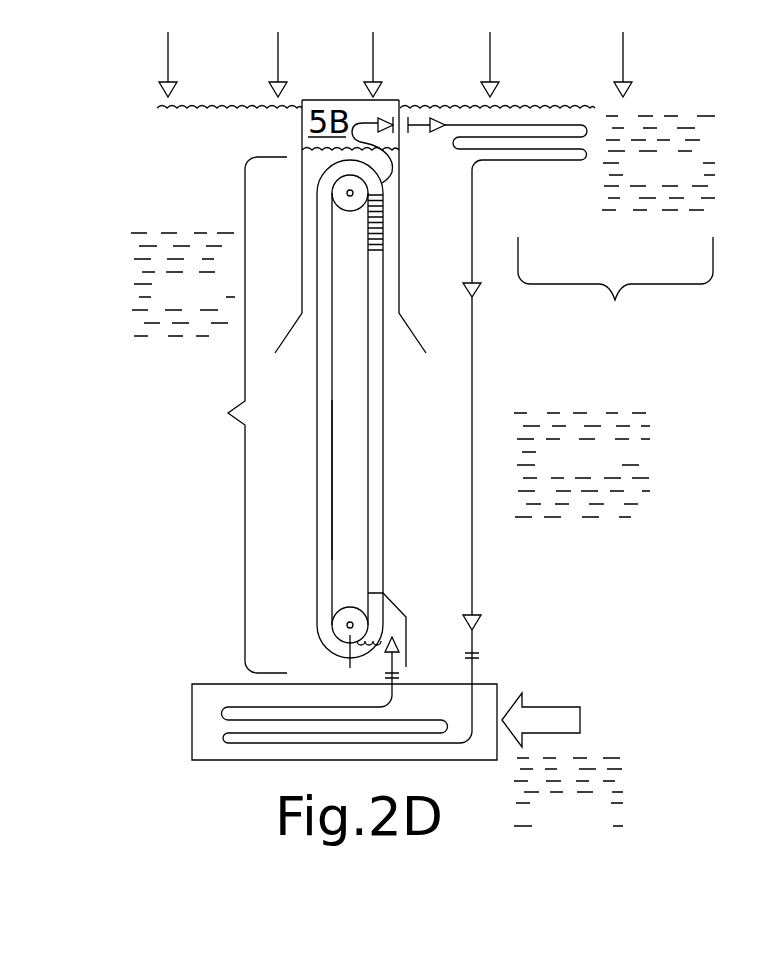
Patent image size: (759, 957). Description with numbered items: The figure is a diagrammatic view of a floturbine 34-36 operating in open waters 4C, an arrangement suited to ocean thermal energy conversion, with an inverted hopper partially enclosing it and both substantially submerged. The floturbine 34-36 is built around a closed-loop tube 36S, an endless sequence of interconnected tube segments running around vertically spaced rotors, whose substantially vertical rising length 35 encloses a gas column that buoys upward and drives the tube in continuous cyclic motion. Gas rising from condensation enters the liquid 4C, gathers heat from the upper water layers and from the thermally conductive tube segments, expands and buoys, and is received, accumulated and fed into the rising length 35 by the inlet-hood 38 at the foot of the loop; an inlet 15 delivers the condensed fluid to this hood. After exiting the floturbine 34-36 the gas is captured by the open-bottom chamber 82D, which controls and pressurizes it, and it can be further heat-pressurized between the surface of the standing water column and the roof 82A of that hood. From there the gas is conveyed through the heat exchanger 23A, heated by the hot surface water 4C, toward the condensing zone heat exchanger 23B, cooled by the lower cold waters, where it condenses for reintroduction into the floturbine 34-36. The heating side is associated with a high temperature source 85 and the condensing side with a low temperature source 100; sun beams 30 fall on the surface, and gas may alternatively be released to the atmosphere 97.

The atmosphere 97 is at (548, 66).
The sun beams 30 is at (623, 50).
The roof of the hood 82A is at (312, 100).
The open-bottom chamber 82D is at (400, 264).
The heat exchanger 23A is at (583, 162).
The high temperature source 85 is at (583, 336).
The open waters 4C is at (423, 473).
The floturbine 34-36 is at (203, 415).
The rising length 35 is at (384, 470).
The closed-loop tube 36S is at (323, 498).
The inlet-hood 38 is at (408, 612).
The inlet 15 is at (402, 640).
The condensing zone heat exchanger 23B is at (487, 686).
The low temperature source 100 is at (670, 733).